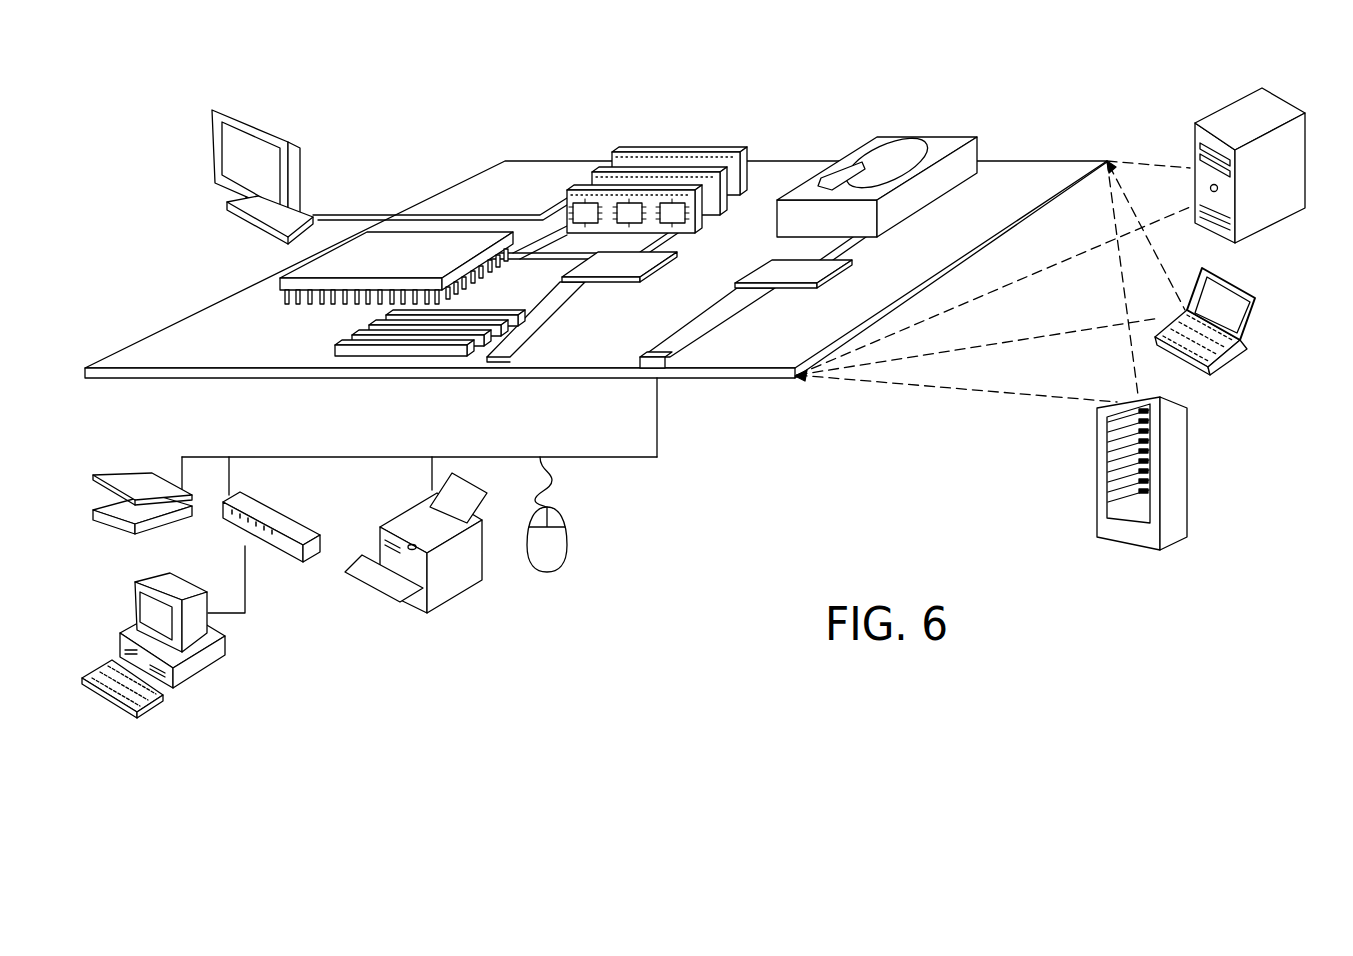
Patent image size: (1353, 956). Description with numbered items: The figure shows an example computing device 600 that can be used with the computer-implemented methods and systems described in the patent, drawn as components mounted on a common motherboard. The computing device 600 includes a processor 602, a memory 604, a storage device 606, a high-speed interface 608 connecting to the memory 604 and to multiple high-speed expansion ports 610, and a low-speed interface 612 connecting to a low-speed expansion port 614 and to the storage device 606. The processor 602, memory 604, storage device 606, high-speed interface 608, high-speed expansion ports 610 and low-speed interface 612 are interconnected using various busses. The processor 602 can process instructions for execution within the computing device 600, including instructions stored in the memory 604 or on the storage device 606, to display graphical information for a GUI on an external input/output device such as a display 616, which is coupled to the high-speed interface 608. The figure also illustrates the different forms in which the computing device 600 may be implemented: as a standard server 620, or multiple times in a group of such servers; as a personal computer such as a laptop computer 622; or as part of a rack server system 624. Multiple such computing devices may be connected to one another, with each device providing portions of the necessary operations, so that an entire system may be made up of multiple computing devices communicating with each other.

The computing device 600 is at (430, 155).
The processor 602 is at (290, 282).
The memory 604 is at (617, 157).
The storage device 606 is at (860, 143).
The high-speed interface 608 is at (593, 263).
The high-speed expansion ports 610 is at (350, 337).
The low-speed interface 612 is at (773, 268).
The low-speed expansion port 614 is at (667, 368).
The display 616 is at (220, 104).
The standard server 620 is at (1193, 153).
The laptop computer 622 is at (1257, 300).
The rack server system 624 is at (1097, 500).